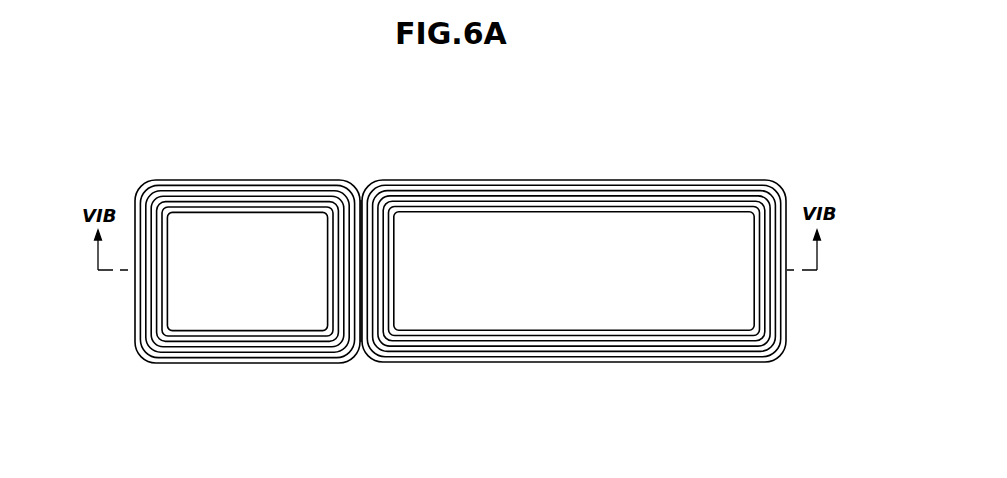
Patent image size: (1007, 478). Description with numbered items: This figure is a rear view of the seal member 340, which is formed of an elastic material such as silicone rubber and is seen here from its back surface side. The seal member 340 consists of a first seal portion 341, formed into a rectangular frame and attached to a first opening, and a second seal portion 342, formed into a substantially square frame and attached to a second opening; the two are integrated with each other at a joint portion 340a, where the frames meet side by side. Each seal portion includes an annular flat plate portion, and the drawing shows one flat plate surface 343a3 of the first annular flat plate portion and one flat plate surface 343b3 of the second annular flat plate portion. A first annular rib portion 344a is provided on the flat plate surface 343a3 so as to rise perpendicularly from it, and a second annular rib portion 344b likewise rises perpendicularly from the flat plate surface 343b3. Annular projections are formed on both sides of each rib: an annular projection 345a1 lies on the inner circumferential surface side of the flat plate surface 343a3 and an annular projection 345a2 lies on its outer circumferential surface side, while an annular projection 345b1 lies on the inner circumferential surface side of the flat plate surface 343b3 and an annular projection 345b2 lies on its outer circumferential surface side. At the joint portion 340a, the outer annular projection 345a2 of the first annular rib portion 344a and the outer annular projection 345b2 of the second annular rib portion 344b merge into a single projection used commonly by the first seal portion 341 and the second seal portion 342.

The seal member 340 is at (688, 160).
The joint portion 340a is at (362, 180).
The first seal portion 341 is at (590, 178).
The second seal portion 342 is at (240, 180).
The flat plate surface of the first annular flat plate portion 343a3 is at (687, 352).
The flat plate surface of the second annular flat plate portion 343b3 is at (248, 353).
The first annular rib portion 344a is at (576, 344).
The second annular rib portion 344b is at (317, 346).
The annular projection 345a1 is at (470, 330).
The annular projection 345a2 is at (738, 362).
The annular projection 345b1 is at (222, 331).
The annular projection 345b2 is at (160, 363).